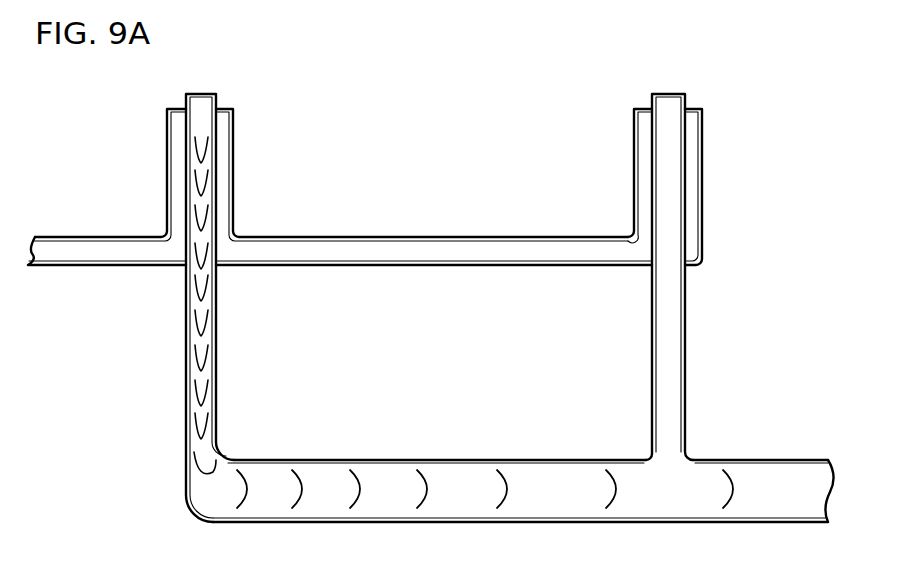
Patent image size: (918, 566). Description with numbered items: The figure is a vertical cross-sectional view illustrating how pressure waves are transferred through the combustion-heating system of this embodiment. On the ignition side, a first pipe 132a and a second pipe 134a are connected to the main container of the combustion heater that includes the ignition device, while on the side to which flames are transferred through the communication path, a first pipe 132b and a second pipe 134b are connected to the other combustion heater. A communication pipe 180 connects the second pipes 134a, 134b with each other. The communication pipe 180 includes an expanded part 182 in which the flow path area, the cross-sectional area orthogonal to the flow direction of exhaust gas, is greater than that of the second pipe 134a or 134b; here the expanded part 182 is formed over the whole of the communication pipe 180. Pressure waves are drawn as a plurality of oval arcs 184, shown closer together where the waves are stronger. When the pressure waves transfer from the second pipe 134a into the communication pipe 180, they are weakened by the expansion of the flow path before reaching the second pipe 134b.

The first pipe 132a is at (234, 138).
The first pipe 132b is at (703, 138).
The second pipe 134a is at (218, 103).
The second pipe 134b is at (687, 103).
The communication pipe 180 is at (455, 421).
The expanded part 182 is at (506, 460).
The oval arcs 184 is at (353, 467).